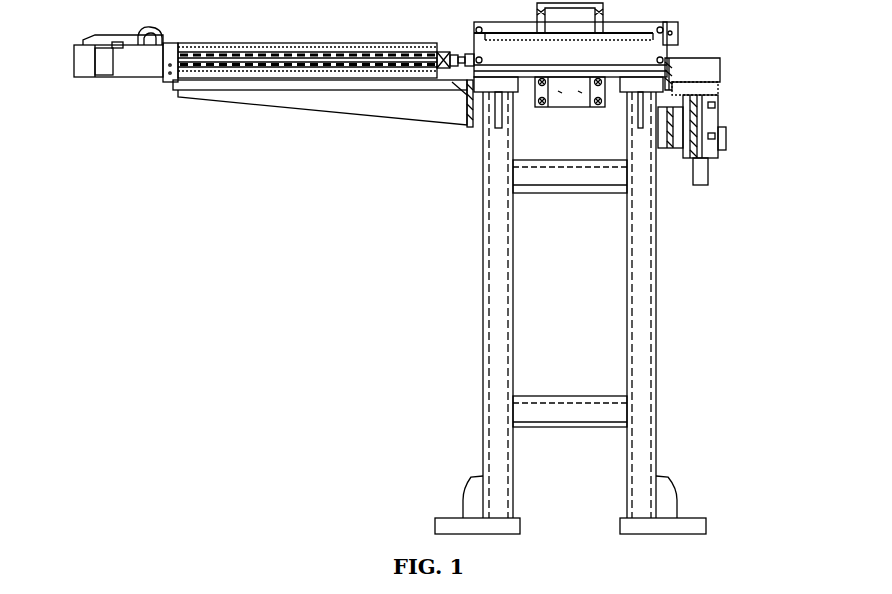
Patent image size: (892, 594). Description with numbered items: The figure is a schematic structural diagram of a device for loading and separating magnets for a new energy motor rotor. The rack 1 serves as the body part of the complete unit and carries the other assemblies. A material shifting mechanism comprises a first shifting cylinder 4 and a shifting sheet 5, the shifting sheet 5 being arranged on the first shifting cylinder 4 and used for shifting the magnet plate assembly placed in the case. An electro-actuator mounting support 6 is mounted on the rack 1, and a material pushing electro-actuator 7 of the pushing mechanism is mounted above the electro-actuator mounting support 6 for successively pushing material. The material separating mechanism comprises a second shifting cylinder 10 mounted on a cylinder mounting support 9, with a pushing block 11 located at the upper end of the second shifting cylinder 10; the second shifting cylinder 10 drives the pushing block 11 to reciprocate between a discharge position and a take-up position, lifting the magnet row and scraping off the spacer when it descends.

The rack 1 is at (642, 363).
The first shifting cylinder 4 is at (567, 98).
The shifting sheet 5 is at (537, 97).
The electro-actuator mounting support 6 is at (357, 114).
The material pushing electro-actuator 7 is at (287, 60).
The cylinder mounting support 9 is at (670, 148).
The second shifting cylinder 10 is at (710, 122).
The pushing block 11 is at (702, 72).